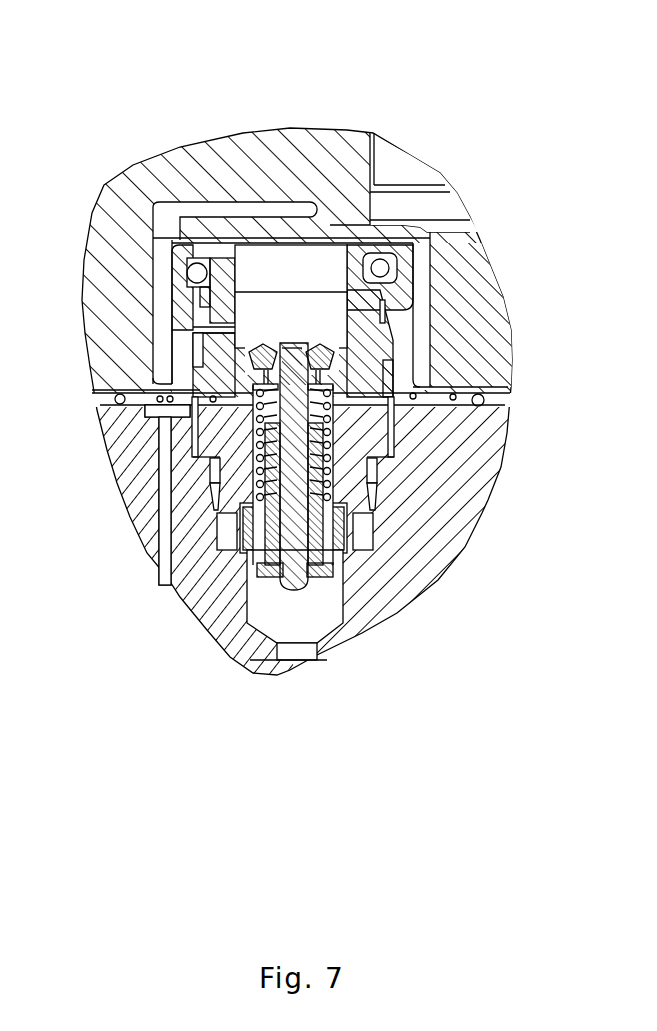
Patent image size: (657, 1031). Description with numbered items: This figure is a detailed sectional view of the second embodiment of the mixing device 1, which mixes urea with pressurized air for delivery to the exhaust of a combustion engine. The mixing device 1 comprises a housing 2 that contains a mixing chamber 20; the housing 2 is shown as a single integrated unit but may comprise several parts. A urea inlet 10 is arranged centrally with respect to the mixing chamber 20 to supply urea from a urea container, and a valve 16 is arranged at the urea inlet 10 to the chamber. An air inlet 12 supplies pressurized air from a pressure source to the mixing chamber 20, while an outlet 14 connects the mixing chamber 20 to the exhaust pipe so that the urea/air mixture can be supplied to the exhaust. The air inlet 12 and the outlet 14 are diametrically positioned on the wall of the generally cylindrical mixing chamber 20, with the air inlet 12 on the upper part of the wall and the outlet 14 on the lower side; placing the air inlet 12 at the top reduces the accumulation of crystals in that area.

The mixing device 1 is at (97, 163).
The housing 2 is at (117, 490).
The urea inlet 10 is at (305, 653).
The air inlet 12 is at (197, 330).
The outlet 14 is at (393, 162).
The valve 16 is at (330, 440).
The mixing chamber 20 is at (270, 268).